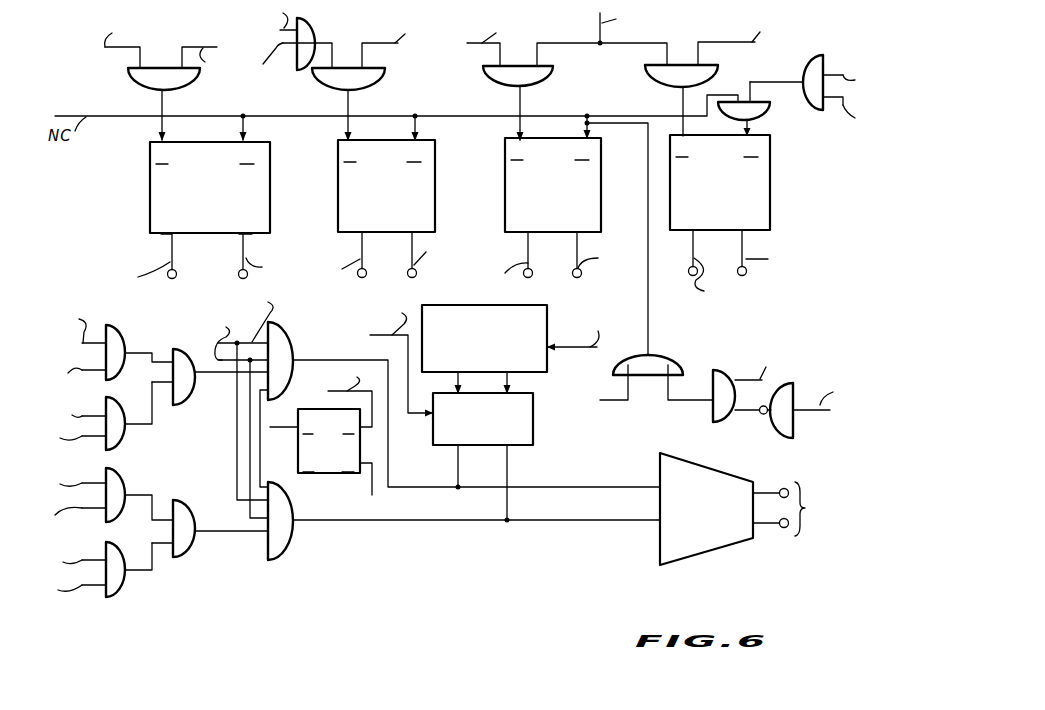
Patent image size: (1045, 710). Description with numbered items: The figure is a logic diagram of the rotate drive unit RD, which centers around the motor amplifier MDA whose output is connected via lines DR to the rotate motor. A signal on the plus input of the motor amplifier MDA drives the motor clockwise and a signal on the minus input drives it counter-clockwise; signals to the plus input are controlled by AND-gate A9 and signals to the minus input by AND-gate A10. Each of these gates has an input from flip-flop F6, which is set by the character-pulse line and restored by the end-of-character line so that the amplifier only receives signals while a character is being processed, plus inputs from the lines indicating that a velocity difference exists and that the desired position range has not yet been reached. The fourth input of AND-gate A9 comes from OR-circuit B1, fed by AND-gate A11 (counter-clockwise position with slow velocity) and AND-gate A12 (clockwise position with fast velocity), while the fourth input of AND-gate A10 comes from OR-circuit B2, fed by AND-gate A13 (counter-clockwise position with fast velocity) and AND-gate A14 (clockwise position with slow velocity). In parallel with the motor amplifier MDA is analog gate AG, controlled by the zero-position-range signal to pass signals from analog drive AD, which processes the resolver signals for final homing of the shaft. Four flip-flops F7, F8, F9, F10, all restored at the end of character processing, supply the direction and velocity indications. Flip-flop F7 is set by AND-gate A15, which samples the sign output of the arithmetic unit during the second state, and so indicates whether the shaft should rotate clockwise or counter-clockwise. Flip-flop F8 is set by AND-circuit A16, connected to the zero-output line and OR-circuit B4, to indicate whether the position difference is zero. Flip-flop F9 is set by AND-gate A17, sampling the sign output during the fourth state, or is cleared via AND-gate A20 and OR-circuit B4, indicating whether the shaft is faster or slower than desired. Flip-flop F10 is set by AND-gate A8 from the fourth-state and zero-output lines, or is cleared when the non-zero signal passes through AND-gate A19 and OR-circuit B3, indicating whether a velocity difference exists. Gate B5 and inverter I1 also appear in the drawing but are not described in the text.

The AND-gate A15 is at (136, 86).
The OR gate B5 is at (306, 21).
The AND-circuit A16 is at (378, 84).
The AND-gate A17 is at (545, 73).
The AND-gate A8 is at (660, 79).
The OR-circuit B3 is at (767, 109).
The AND-gate A19 is at (822, 58).
The flip-flop F7 is at (222, 193).
The flip-flop F8 is at (398, 191).
The flip-flop F9 is at (566, 189).
The flip-flop F10 is at (740, 188).
The AND-gate A11 is at (109, 334).
The AND-gate A12 is at (118, 443).
The OR-circuit B1 is at (178, 408).
The AND-gate A13 is at (113, 491).
The AND-gate A14 is at (110, 598).
The OR-circuit B2 is at (185, 558).
The AND-gate A9 is at (289, 332).
The AND-gate A10 is at (282, 552).
The flip-flop F6 is at (313, 474).
The analog drive AD is at (490, 372).
The analog gate AG is at (494, 440).
The OR-circuit B4 is at (660, 358).
The AND-gate A20 is at (738, 353).
The inverter I1 is at (782, 397).
The motor amplifier MDA is at (747, 502).
The lines DR is at (793, 509).
The rotate drive unit RD is at (598, 610).